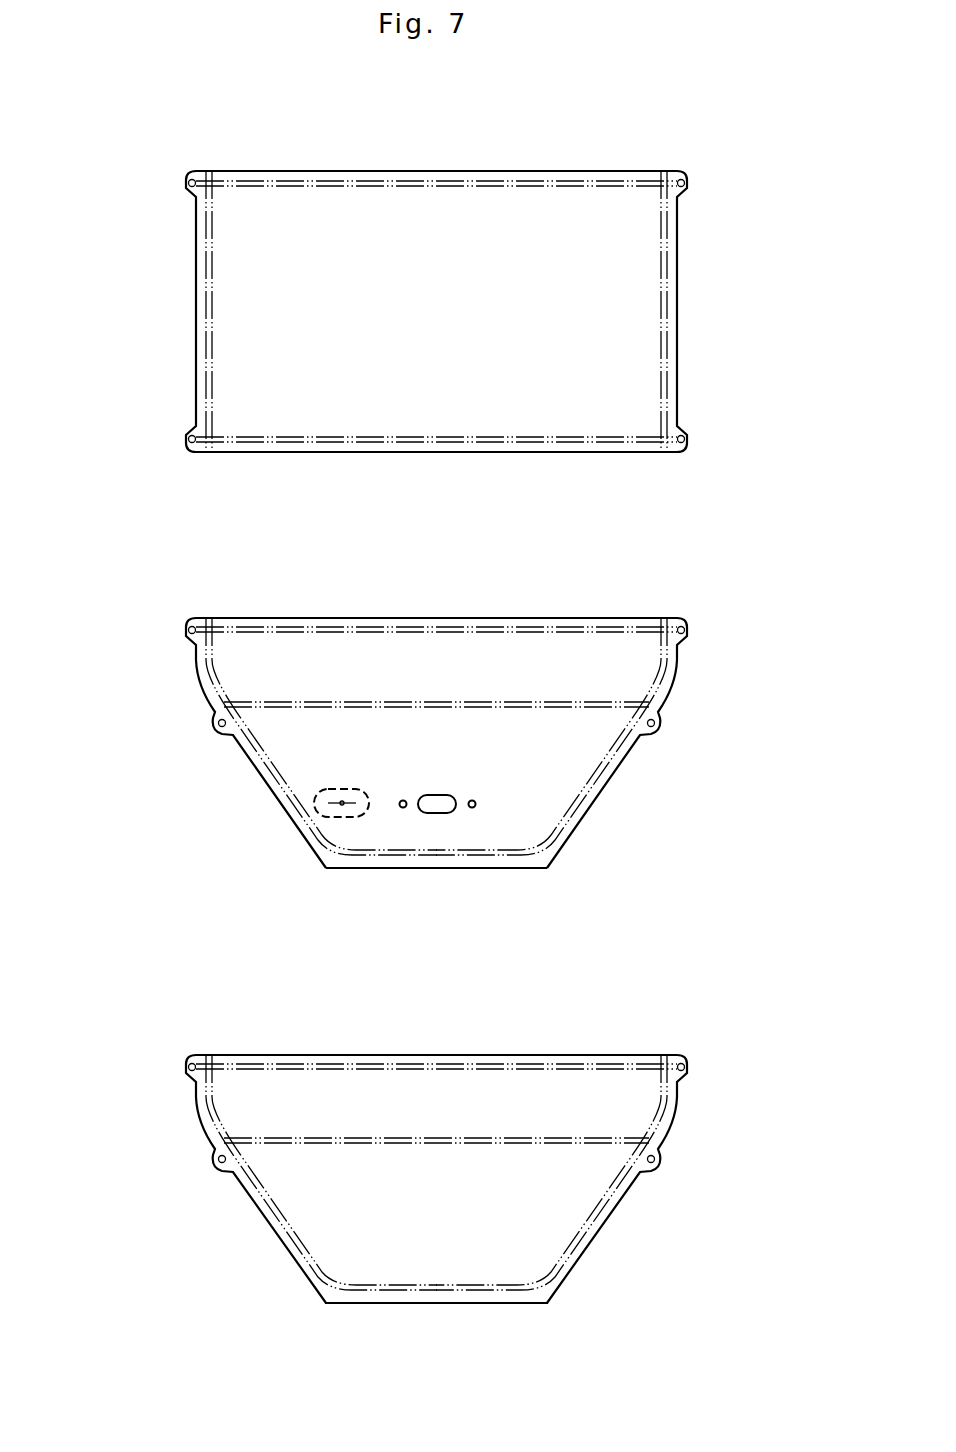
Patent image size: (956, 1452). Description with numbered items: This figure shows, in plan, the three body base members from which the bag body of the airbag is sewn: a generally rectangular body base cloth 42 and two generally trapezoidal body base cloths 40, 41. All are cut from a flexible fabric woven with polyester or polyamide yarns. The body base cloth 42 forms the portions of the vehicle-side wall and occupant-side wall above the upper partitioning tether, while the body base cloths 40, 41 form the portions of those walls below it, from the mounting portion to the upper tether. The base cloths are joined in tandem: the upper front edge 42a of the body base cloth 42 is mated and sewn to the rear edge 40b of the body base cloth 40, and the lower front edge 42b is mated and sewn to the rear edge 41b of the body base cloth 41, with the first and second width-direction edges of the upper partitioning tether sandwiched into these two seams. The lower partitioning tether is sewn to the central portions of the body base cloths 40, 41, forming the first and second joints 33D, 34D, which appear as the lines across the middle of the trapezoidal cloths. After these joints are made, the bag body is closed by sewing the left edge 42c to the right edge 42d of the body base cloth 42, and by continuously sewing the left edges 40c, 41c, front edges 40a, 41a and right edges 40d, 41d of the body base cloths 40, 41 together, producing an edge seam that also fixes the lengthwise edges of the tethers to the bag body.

The body base cloth 42 is at (657, 160).
The upper front edge 42a is at (345, 452).
The lower front edge 42b is at (357, 171).
The left edge 42c is at (677, 315).
The right edge 42d is at (196, 313).
The first joint 33D is at (437, 703).
The second joint 34D is at (437, 1140).
The body base cloth 40 is at (655, 605).
The front edge 40a is at (437, 868).
The rear edge 40b is at (437, 618).
The left edge 40c is at (618, 768).
The right edge 40d is at (285, 790).
The body base cloth 41 is at (655, 1043).
The front edge 41a is at (437, 1303).
The rear edge 41b is at (437, 1055).
The left edge 41c is at (580, 1240).
The right edge 41d is at (285, 1225).